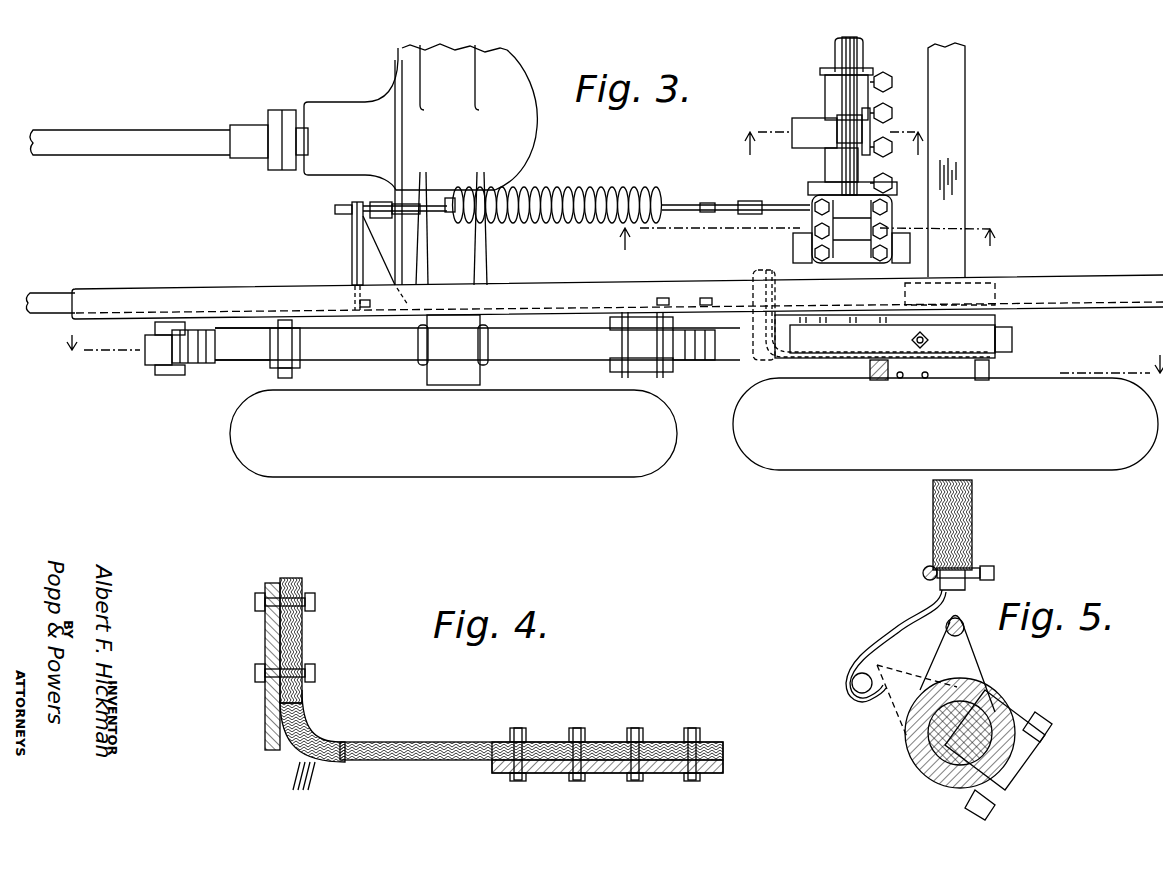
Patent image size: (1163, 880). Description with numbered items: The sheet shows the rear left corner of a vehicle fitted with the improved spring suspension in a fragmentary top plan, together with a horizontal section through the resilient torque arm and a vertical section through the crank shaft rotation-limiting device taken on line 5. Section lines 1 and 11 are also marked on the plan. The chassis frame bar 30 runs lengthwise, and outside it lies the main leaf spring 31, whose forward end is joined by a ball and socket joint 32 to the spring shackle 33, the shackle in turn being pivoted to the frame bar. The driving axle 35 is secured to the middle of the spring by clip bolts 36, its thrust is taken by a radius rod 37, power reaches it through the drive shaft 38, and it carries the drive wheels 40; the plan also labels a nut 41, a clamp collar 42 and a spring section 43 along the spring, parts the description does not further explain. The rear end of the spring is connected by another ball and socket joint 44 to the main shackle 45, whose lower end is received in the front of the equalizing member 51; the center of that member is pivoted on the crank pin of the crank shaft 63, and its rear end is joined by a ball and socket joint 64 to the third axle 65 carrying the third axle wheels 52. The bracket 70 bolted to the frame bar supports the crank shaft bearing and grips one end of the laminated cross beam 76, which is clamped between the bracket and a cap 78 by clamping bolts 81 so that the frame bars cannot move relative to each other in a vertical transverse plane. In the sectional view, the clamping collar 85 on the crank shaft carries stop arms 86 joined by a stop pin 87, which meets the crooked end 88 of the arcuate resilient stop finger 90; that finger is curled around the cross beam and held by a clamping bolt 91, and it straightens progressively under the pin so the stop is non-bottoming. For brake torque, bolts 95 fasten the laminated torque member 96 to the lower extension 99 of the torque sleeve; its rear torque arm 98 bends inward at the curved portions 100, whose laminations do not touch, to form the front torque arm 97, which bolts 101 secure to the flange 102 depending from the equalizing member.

In FIG. 3, the section line 1- 1 is at (603, 354).
In FIG. 3, the section line 5— 5 is at (832, 136).
In FIG. 3, the section line 11- 11 is at (806, 236).
In FIG. 3, the chassis frame bar 30 is at (210, 290).
In FIG. 3, the main leaf spring 31 is at (537, 360).
In FIG. 3, the ball and socket joint 32 is at (145, 379).
In FIG. 3, the spring shackle 33 is at (182, 373).
In FIG. 3, the driving axle 35 is at (450, 378).
In FIG. 3, the clip bolt 36 is at (478, 346).
In FIG. 3, the radius rod 37 is at (52, 281).
In FIG. 3, the drive shaft 38 is at (140, 116).
In FIG. 3, the drive wheel 40 is at (459, 444).
In FIG. 3, the nut 41 is at (292, 376).
In FIG. 3, the clamp collar 42 is at (300, 348).
In FIG. 3, the tube section 43 is at (232, 362).
In FIG. 3, the ball and socket joint 44 is at (715, 364).
In FIG. 3, the main shackle 45 is at (655, 371).
In FIG. 3, the equalizing member 51 is at (742, 343).
In FIG. 3, the third axle wheel 52 is at (969, 442).
In FIG. 3, the crank shaft 63 is at (836, 45).
In FIG. 5, the crank shaft 63 is at (928, 759).
In FIG. 3, the ball and socket joint 64 is at (960, 318).
In FIG. 3, the third axle 65 is at (960, 77).
In FIG. 3, the bracket 70 is at (893, 265).
In FIG. 3, the laminated cross beam 76 is at (840, 60).
In FIG. 5, the laminated cross beam 76 is at (972, 524).
In FIG. 3, the cap 78 is at (853, 268).
In FIG. 3, the clamping bolt 81 is at (814, 232).
In FIG. 3, the clamping collar 85 is at (892, 101).
In FIG. 5, the clamping collar 85 is at (905, 740).
In FIG. 5, the stop arm 86 is at (978, 668).
In FIG. 5, the stop pin 87 is at (965, 634).
In FIG. 5, the crooked end 88 is at (855, 698).
In FIG. 3, the resilient stop finger 90 is at (800, 118).
In FIG. 5, the resilient stop finger 90 is at (912, 613).
In FIG. 3, the clamping bolt 91 is at (836, 117).
In FIG. 5, the clamping bolt 91 is at (995, 574).
In FIG. 4, the bolt 95 is at (630, 782).
In FIG. 3, the torque member 96 is at (796, 374).
In FIG. 4, the torque member 96 is at (339, 733).
In FIG. 4, the front torque arm 97 is at (303, 643).
In FIG. 4, the rear torque arm 98 is at (420, 762).
In FIG. 3, the lower extension 99 is at (888, 365).
In FIG. 4, the lower extension 99 is at (668, 771).
In FIG. 4, the curved portion 100 is at (306, 785).
In FIG. 4, the bolt 101 is at (255, 602).
In FIG. 4, the flange 102 is at (266, 700).